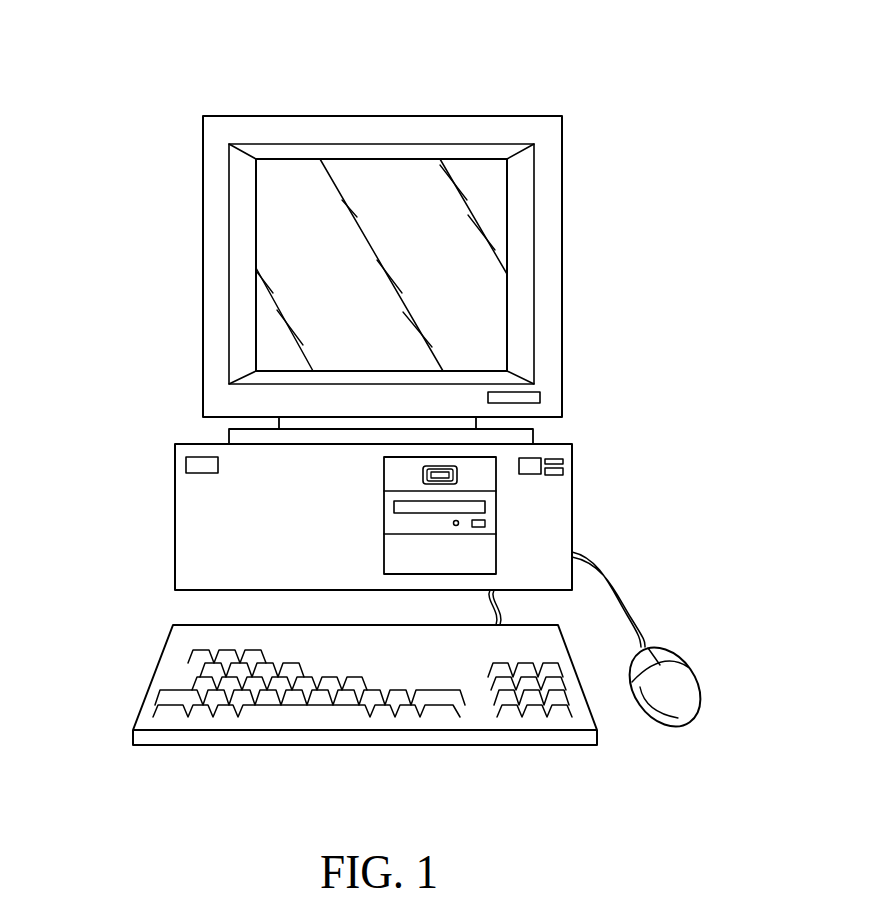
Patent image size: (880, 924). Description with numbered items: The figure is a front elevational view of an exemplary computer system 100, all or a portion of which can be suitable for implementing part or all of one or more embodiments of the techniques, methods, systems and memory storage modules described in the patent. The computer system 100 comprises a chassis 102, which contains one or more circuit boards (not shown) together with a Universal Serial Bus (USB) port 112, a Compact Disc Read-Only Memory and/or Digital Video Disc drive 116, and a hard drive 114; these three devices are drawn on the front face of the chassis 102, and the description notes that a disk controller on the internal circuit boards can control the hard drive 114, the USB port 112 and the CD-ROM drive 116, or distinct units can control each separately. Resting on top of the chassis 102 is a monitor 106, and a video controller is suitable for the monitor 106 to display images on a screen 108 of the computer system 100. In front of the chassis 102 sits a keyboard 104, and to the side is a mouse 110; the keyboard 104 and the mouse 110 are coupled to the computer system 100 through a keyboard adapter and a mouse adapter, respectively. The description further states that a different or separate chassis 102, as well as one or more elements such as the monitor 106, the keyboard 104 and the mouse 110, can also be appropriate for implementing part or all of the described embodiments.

The computer system 100 is at (557, 92).
The chassis 102 is at (175, 520).
The keyboard 104 is at (155, 670).
The monitor 106 is at (275, 116).
The screen 108 is at (302, 268).
The mouse 110 is at (683, 680).
The Universal Serial Bus (USB) port 112 is at (457, 470).
The hard drive 114 is at (487, 553).
The Compact Disc Read-Only Memory (CD-ROM) and/or Digital Video Disc (DVD) drive 116 is at (487, 512).